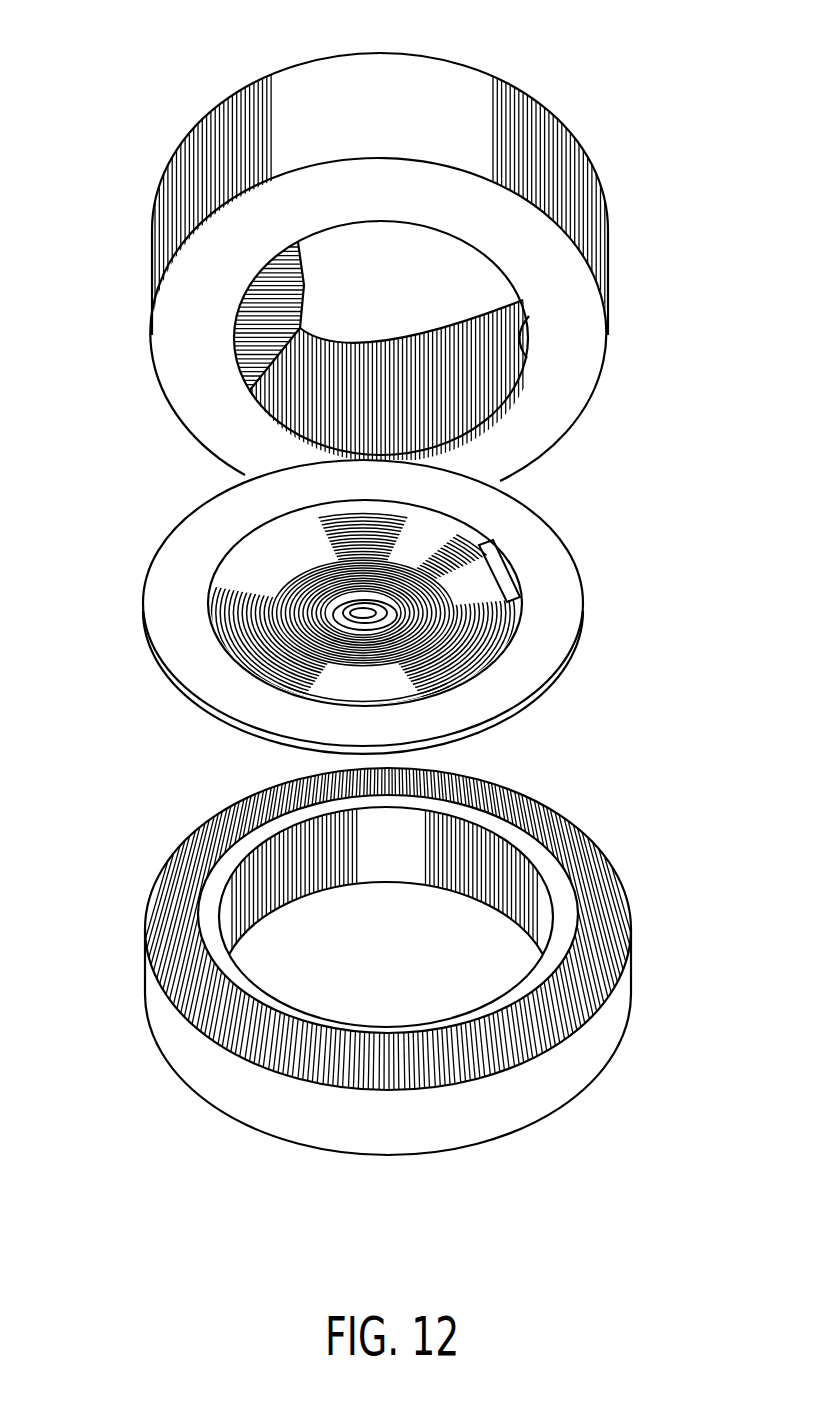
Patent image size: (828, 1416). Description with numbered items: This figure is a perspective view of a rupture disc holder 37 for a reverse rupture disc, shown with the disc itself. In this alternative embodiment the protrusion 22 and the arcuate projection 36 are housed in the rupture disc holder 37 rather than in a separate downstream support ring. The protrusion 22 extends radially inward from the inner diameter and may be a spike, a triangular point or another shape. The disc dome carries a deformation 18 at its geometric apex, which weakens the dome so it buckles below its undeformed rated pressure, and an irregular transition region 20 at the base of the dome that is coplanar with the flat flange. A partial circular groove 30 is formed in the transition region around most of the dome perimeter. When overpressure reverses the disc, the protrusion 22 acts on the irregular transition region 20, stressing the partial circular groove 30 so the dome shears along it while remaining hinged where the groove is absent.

The rupture disc holder 37 is at (408, 105).
The protrusion 22 is at (525, 335).
The arcuate projection 36 is at (267, 312).
The deformation 18 is at (363, 608).
The irregular transition region 20 is at (490, 555).
The partial circular groove 30 is at (520, 583).